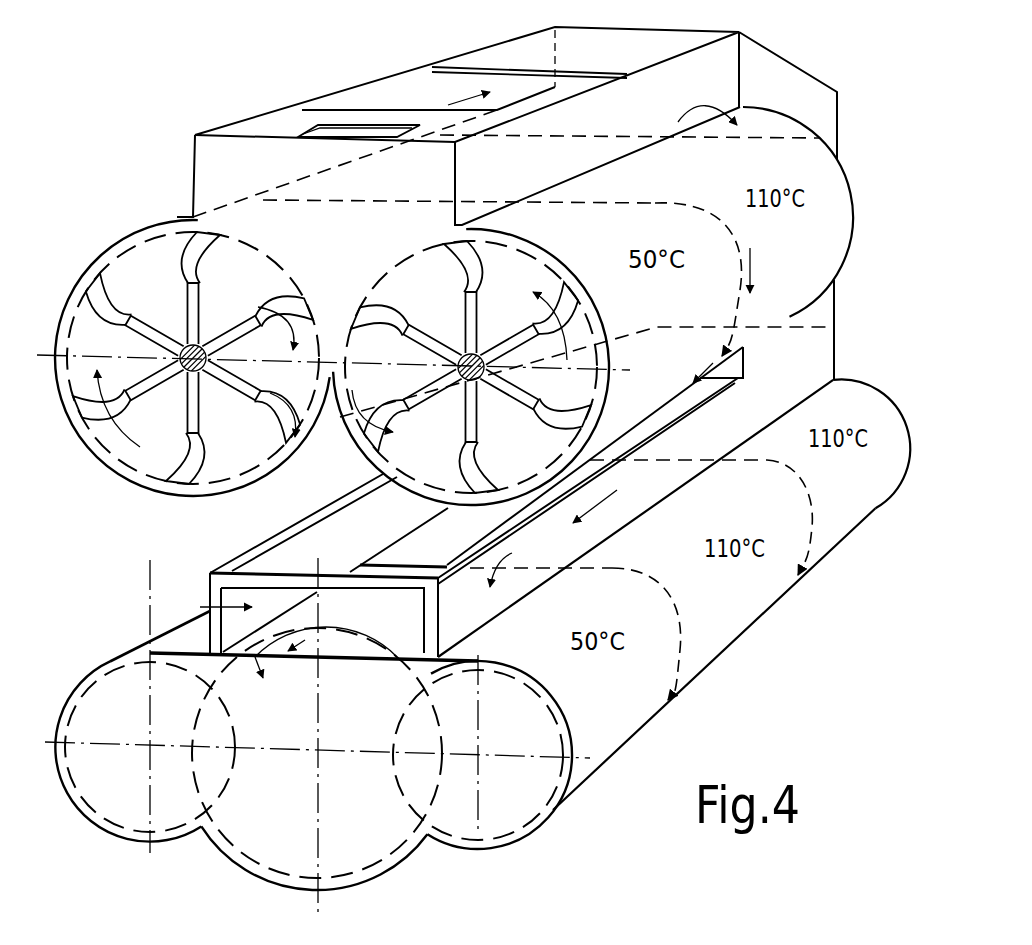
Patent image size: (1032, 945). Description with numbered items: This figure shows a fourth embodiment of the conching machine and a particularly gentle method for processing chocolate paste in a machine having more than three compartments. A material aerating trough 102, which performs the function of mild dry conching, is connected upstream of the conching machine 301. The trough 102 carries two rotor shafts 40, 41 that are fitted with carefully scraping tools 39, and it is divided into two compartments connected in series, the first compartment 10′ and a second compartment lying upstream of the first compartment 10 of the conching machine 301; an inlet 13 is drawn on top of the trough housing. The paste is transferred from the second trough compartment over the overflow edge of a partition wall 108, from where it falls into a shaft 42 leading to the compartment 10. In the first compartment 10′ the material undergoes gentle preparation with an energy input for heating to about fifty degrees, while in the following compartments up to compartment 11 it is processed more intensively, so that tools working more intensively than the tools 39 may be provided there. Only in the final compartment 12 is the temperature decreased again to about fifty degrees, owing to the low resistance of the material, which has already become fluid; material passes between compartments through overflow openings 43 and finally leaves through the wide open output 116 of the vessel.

The first compartment 10 is at (853, 500).
The first compartment of the aerating trough 10′ is at (700, 350).
The compartment 11 is at (758, 597).
The final compartment 12 is at (628, 728).
The inlet slot 13 is at (364, 77).
The tools 39 is at (177, 263).
The rotor shaft 40 is at (203, 383).
The rotor shaft 41 is at (458, 385).
The shaft 42 is at (840, 125).
The overflow openings 43 is at (634, 942).
The material aerating trough 102 is at (178, 506).
The partition wall 108 is at (633, 130).
The output opening 116 is at (200, 607).
The conching machine 301 is at (260, 878).